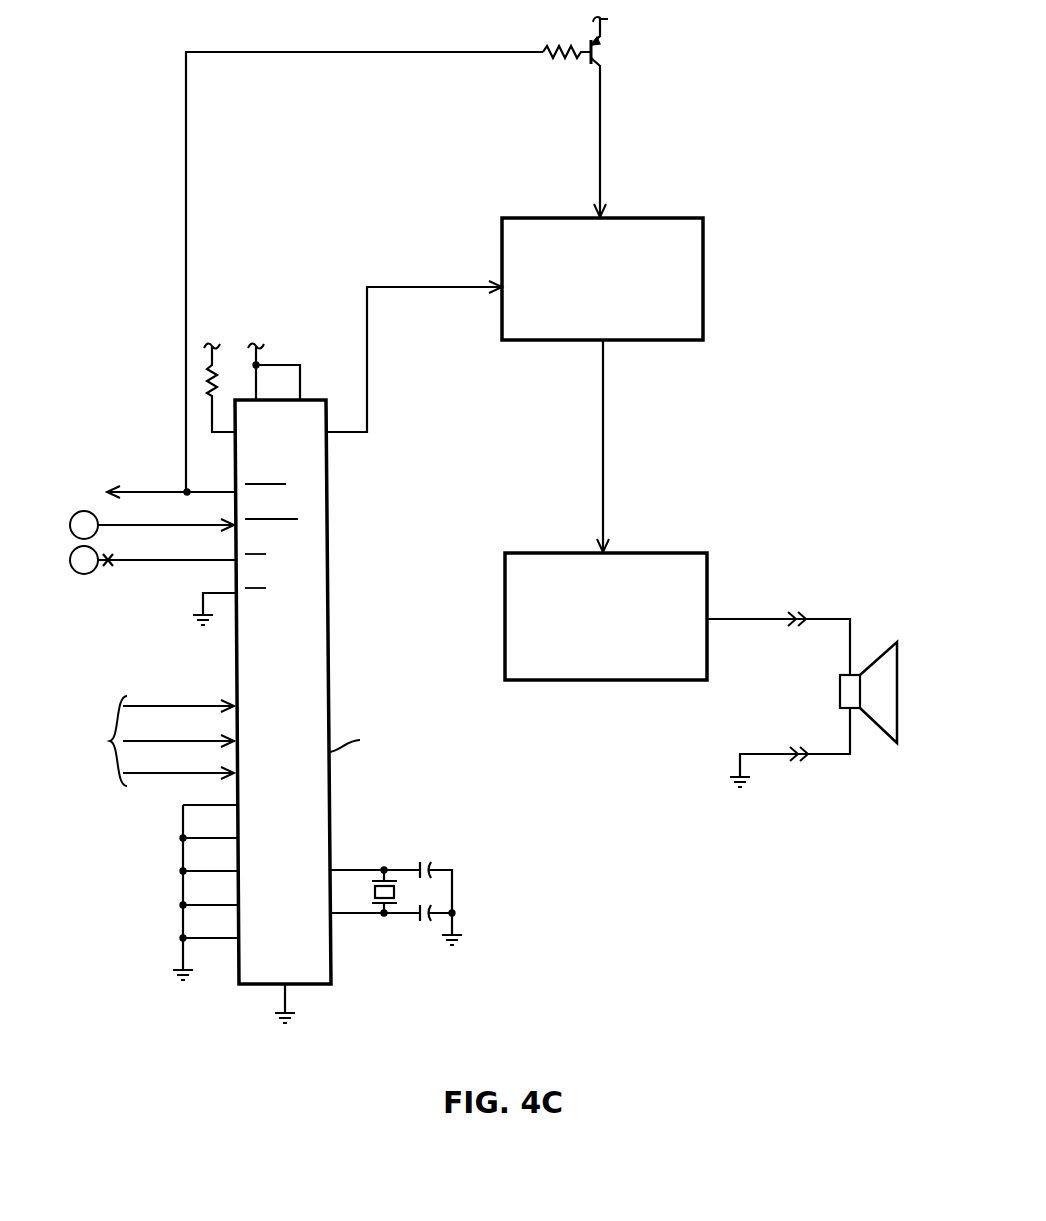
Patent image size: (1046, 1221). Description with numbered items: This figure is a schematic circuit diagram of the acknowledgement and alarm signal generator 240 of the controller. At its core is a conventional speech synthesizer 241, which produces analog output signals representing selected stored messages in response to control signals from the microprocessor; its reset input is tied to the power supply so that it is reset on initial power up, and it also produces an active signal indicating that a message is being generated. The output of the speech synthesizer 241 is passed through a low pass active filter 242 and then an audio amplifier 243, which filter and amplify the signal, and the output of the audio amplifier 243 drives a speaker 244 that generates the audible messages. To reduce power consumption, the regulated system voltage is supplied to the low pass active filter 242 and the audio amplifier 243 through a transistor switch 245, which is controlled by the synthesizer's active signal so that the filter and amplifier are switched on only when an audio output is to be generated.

The acknowledgement and alarm signal generator 240 is at (604, 891).
The speech synthesizer 241 is at (331, 818).
The low pass active filter 242 is at (667, 218).
The audio amplifier 243 is at (668, 553).
The speaker 244 is at (840, 695).
The transistor switch 245 is at (610, 59).